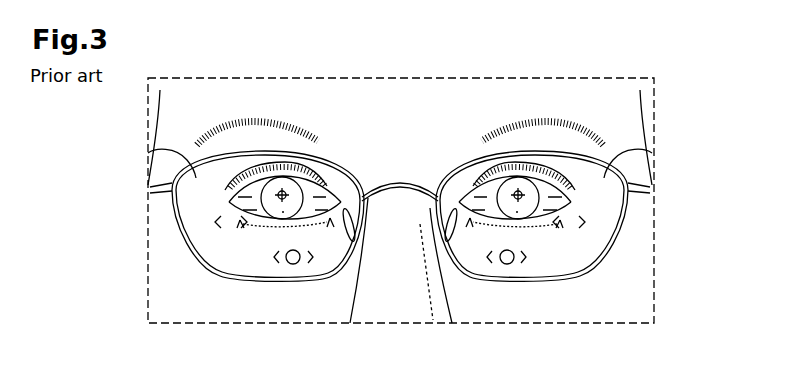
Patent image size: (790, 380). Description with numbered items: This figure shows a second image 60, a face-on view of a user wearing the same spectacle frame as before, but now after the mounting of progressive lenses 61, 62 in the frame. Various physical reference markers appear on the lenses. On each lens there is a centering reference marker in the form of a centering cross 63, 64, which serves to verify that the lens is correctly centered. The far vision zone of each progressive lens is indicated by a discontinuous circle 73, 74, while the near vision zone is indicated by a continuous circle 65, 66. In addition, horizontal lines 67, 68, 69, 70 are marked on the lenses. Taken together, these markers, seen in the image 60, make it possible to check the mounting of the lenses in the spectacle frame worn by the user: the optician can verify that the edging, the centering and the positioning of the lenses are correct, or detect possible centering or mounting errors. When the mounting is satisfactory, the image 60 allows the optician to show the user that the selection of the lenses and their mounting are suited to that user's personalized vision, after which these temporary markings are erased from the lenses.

The second image 60 is at (163, 310).
The progressive lens 61 is at (150, 152).
The progressive lens 62 is at (655, 150).
The centering cross 63 is at (304, 198).
The centering cross 64 is at (490, 183).
The continuous circle 65 is at (293, 265).
The continuous circle 66 is at (507, 265).
The horizontal line 67 is at (251, 190).
The horizontal line 68 is at (552, 193).
The horizontal line 69 is at (218, 212).
The horizontal line 70 is at (596, 211).
The discontinuous circle 73 is at (282, 168).
The discontinuous circle 74 is at (516, 165).